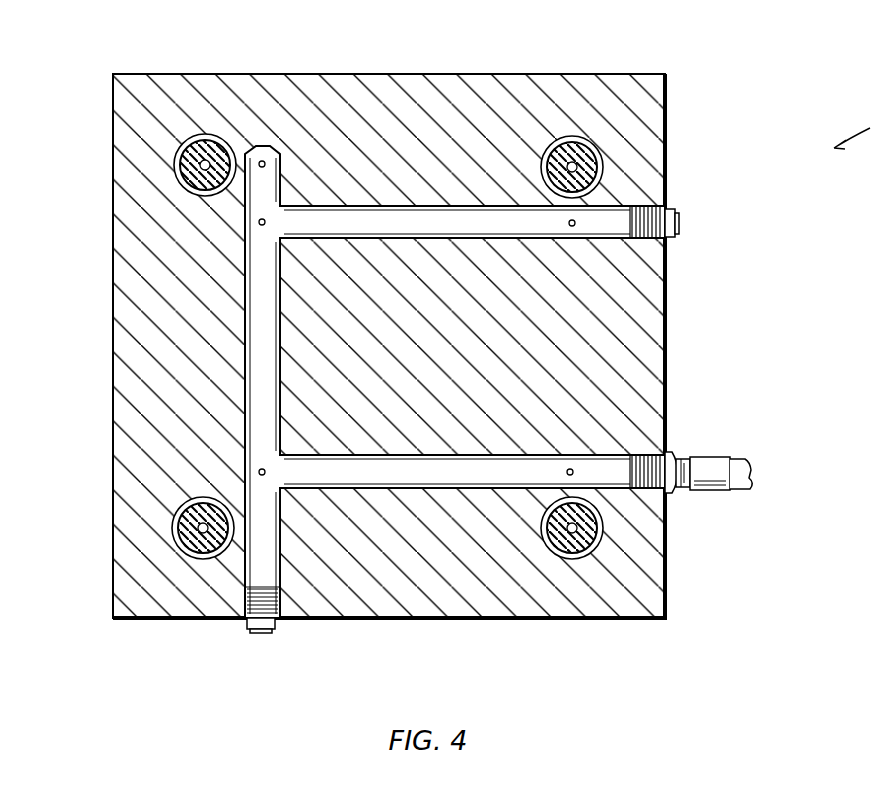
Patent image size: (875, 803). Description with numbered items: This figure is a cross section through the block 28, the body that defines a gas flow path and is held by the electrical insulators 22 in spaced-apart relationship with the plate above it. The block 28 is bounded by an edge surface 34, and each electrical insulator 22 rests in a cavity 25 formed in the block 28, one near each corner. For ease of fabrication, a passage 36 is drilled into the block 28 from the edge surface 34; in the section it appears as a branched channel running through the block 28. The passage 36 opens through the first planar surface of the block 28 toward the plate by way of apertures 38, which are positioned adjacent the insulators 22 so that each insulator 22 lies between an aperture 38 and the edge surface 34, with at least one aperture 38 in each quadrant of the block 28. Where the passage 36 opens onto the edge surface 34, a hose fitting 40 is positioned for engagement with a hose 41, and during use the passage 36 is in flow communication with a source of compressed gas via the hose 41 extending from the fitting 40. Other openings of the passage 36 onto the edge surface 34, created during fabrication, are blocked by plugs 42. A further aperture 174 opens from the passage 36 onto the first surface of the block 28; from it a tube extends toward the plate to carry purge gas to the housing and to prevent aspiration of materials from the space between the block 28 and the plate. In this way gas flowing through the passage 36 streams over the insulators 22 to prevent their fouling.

The electrical insulator 22 is at (208, 136).
The cavity 25 is at (177, 177).
The block 28 is at (650, 74).
The edge surface 34 is at (666, 341).
The passage 36 is at (618, 226).
The aperture 38 is at (265, 219).
The hose fitting 40 is at (677, 451).
The hose 41 is at (750, 460).
The plug 42 is at (680, 226).
The aperture 174 is at (264, 162).